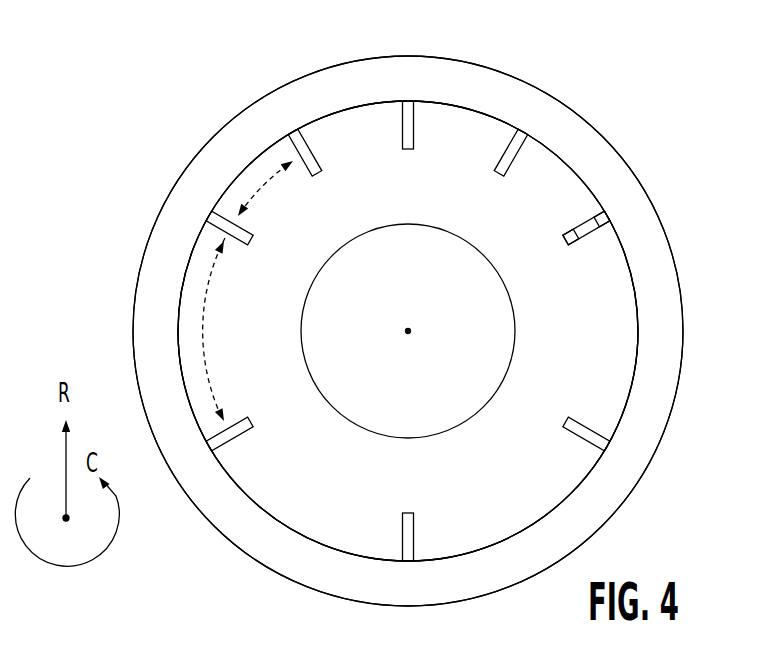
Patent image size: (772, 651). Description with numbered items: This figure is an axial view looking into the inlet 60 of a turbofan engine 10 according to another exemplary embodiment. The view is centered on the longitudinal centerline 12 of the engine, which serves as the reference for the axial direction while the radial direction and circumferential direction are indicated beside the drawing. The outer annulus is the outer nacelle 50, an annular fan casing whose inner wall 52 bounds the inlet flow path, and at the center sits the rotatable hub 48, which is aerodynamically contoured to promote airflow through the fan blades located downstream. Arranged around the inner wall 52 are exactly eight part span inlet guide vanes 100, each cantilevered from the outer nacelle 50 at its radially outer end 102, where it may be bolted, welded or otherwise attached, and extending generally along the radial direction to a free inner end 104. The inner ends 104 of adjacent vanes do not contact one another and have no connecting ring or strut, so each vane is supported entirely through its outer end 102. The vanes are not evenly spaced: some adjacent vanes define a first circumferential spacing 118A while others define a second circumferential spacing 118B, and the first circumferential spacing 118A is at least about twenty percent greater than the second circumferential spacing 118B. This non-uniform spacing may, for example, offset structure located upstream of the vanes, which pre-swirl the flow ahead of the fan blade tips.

The turbofan engine 10 is at (700, 148).
The longitudinal centerline 12 is at (410, 328).
The hub 48 is at (478, 410).
The outer nacelle 50 is at (573, 142).
The inner wall 52 is at (568, 177).
The inlet 60 is at (486, 126).
The part span inlet guide vane 100 is at (590, 233).
The outer end 102 is at (620, 213).
The inner end 104 is at (563, 254).
The first circumferential spacing 118A is at (206, 334).
The second circumferential spacing 118B is at (273, 190).